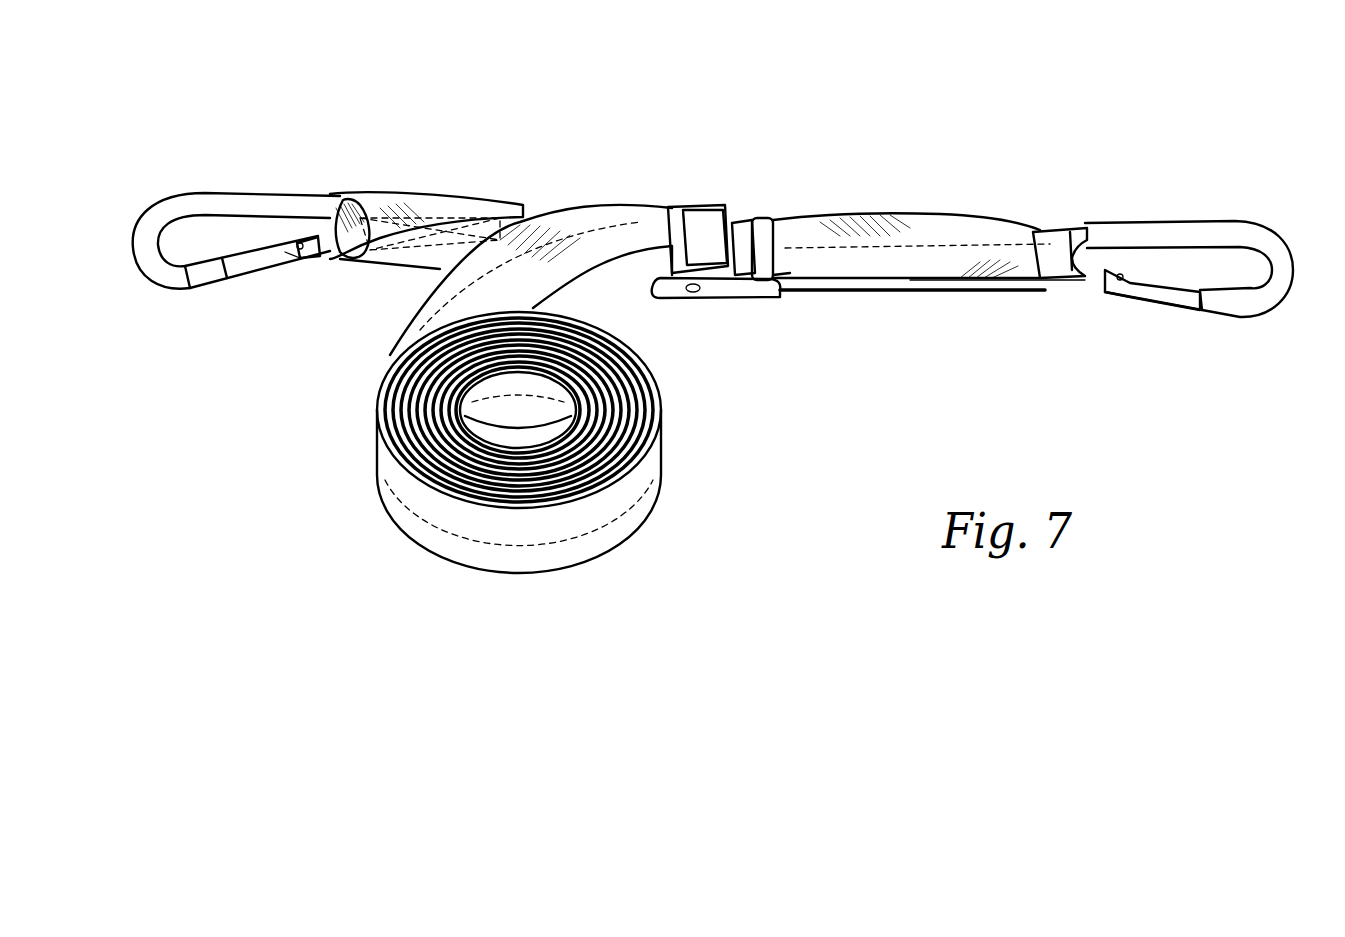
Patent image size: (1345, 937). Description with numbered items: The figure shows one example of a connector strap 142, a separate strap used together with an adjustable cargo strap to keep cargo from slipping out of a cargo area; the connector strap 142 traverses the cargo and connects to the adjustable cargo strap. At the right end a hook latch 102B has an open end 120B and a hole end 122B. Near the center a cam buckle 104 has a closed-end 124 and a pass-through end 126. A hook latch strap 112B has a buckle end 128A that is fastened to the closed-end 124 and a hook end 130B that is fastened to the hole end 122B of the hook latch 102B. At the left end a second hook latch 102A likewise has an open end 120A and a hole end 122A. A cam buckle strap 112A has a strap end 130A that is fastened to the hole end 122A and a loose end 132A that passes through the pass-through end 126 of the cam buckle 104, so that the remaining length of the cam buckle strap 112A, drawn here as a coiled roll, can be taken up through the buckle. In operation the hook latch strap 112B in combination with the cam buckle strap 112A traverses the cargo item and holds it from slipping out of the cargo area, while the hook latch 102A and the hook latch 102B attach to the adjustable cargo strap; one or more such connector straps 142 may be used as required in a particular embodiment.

The hook latch 102A is at (236, 218).
The hook latch 102B is at (1195, 254).
The cam buckle 104 is at (707, 270).
The cam buckle strap 112A is at (418, 210).
The hook latch strap 112B is at (943, 290).
The open end 120A is at (193, 222).
The open end 120B is at (1255, 268).
The hole end 122A is at (298, 226).
The hole end 122B is at (1102, 258).
The closed-end 124 is at (760, 228).
The pass-through end 126 is at (696, 208).
The buckle end 128A is at (797, 266).
The strap end 130A is at (358, 248).
The hook end 130B is at (1045, 292).
The loose end 132A is at (633, 290).
The connector strap 142 is at (937, 152).